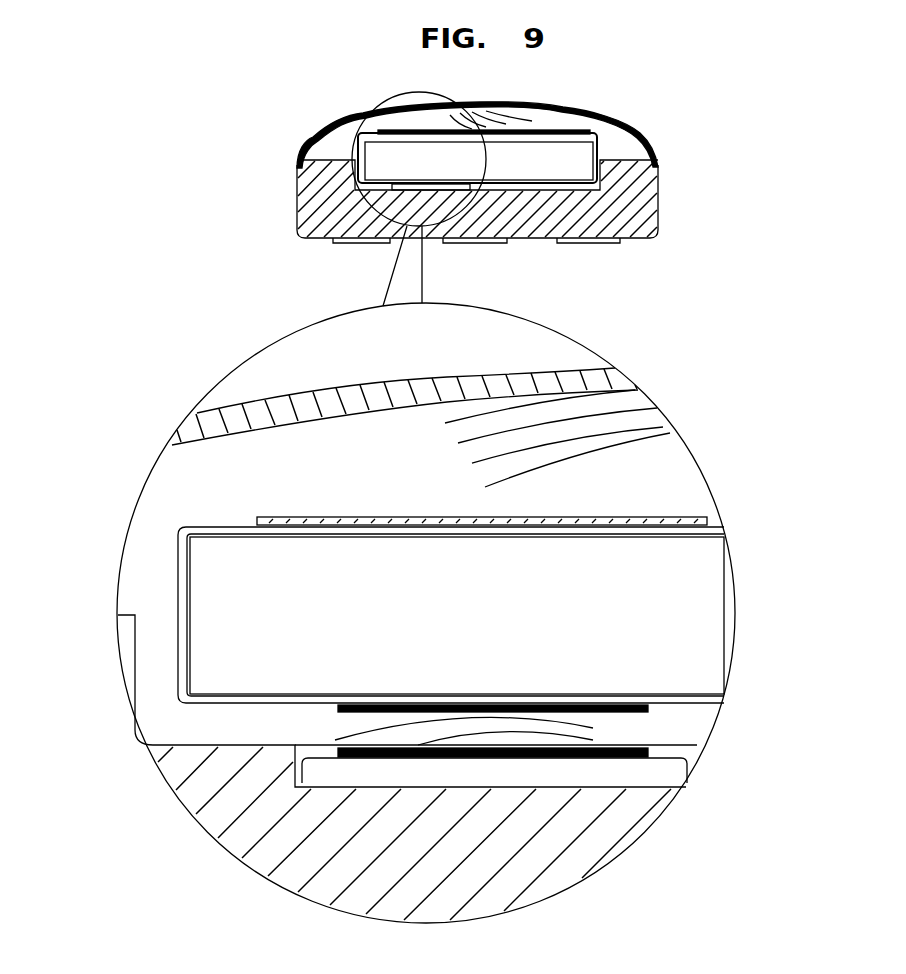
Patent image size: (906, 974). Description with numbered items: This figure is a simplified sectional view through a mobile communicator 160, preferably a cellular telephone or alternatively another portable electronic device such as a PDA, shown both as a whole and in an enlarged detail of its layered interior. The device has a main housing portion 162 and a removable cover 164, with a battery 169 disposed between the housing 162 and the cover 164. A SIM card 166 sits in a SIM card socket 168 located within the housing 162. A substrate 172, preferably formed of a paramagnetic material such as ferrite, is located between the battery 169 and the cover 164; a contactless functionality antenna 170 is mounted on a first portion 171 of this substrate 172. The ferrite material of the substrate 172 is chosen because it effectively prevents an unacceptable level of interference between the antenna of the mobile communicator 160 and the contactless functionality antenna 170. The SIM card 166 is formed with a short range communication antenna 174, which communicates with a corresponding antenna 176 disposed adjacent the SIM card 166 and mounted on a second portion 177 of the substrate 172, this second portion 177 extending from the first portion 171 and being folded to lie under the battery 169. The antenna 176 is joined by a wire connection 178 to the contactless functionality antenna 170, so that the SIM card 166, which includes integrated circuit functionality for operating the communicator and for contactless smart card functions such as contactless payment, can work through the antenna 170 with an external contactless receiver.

The mobile communicator 160 is at (357, 80).
The main housing portion 162 is at (315, 202).
The removable cover 164 is at (342, 120).
The SIM card 166 is at (400, 197).
The SIM card socket 168 is at (680, 749).
The battery 169 is at (587, 153).
The contactless functionality antenna 170 is at (327, 520).
The first portion of substrate 171 is at (567, 130).
The substrate 172 is at (160, 551).
The short range communication antenna 174 is at (358, 745).
The corresponding antenna 176 is at (648, 712).
The second portion of substrate 177 is at (237, 702).
The wire connection 178 is at (178, 578).